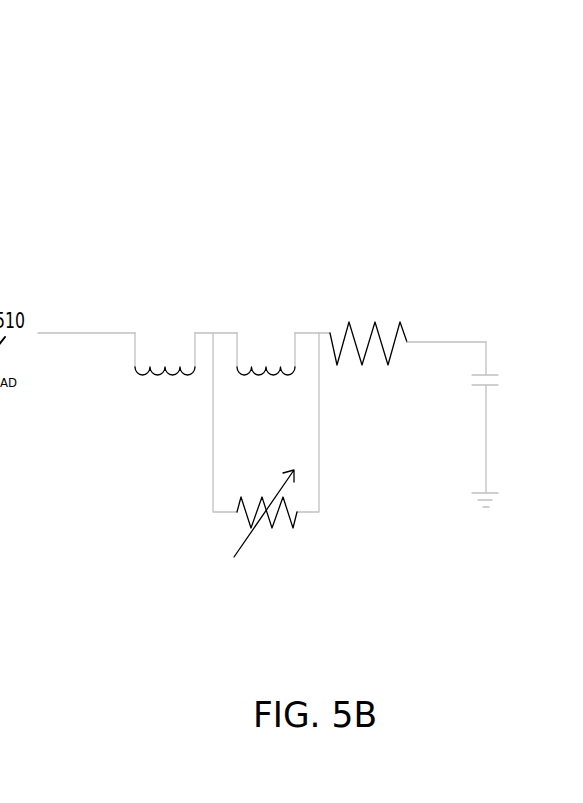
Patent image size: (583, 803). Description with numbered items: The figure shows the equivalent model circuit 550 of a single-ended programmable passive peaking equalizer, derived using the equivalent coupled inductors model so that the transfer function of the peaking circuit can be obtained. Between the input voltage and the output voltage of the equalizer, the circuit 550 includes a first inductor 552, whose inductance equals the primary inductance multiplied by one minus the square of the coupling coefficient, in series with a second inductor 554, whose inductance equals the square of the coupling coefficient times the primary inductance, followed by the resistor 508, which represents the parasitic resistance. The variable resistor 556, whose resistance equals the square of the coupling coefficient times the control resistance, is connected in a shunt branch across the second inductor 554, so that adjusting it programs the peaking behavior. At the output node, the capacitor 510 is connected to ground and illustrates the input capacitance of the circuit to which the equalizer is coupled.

The circuit 550 is at (366, 140).
The resistor 508 is at (418, 322).
The capacitor 510 is at (508, 358).
The inductor 552 is at (157, 385).
The inductor 554 is at (238, 372).
The variable resistor 556 is at (240, 518).